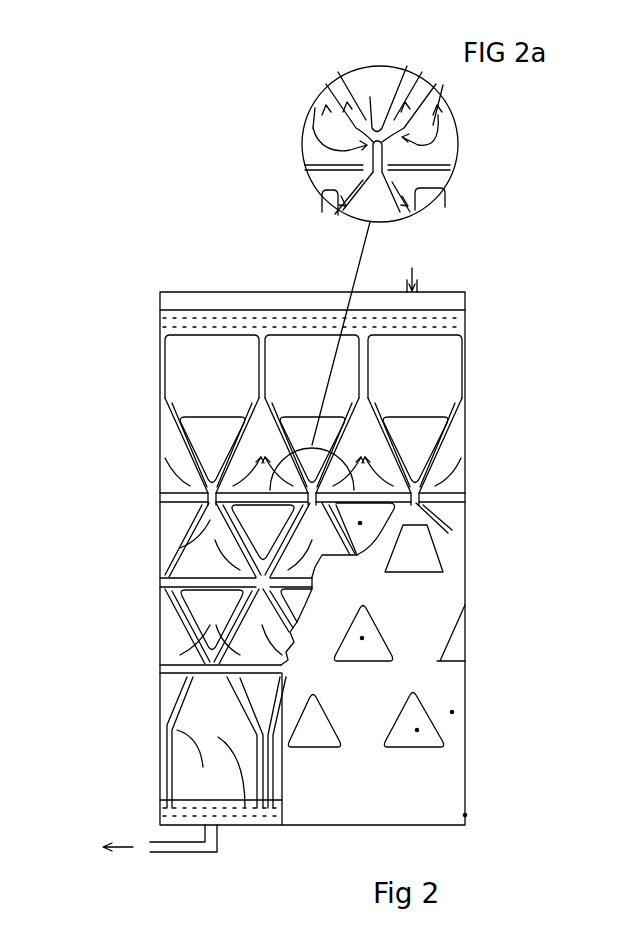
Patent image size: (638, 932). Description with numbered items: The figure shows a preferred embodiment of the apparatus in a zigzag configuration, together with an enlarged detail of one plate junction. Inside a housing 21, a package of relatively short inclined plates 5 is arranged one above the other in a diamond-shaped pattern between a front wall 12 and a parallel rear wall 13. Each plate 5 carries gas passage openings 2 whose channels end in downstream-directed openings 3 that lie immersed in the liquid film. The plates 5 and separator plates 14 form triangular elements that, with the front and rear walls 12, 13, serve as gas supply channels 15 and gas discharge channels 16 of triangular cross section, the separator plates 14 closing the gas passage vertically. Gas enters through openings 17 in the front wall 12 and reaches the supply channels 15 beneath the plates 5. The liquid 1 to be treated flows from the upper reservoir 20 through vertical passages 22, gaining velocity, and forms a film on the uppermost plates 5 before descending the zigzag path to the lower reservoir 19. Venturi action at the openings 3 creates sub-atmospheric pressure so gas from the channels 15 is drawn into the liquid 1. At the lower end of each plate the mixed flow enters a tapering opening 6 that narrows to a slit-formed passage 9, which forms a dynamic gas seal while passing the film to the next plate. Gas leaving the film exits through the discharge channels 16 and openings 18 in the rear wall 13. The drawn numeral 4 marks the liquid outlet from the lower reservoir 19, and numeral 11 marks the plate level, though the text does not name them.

In FIG. 2, the liquid 1 is at (182, 548).
In FIG. 2, the gas passage openings 2 is at (192, 765).
In FIG. 2A, the gas passage openings 2 is at (405, 215).
In FIG. 2, the downstream-directed gas flow openings 3 is at (190, 397).
In FIG. 2A, the downstream-directed gas flow openings 3 is at (370, 97).
In FIG. 2, the liquid outlet pipe 4 is at (233, 826).
In FIG. 2, the inclined plates 5 is at (196, 598).
In FIG. 2A, the inclined plates 5 is at (437, 128).
In FIG. 2A, the tapering opening 6 is at (315, 110).
In FIG. 2A, the slit-formed passage 9 is at (333, 188).
In FIG. 2, the tray plate 11 is at (200, 505).
In FIG. 2, the front wall 12 is at (452, 712).
In FIG. 2, the rear wall 13 is at (196, 424).
In FIG. 2, the separator plates 14 is at (190, 648).
In FIG. 2, the gas supply channels 15 is at (205, 470).
In FIG. 2, the gas discharge channels 16 is at (178, 432).
In FIG. 2, the gas inlet openings 17 is at (362, 638).
In FIG. 2, the gas outlet openings 18 is at (360, 523).
In FIG. 2, the lower reservoir 19 is at (160, 825).
In FIG. 2, the upper reservoir 20 is at (418, 284).
In FIG. 2, the housing 21 is at (465, 815).
In FIG. 2, the vertical passages 22 is at (258, 371).